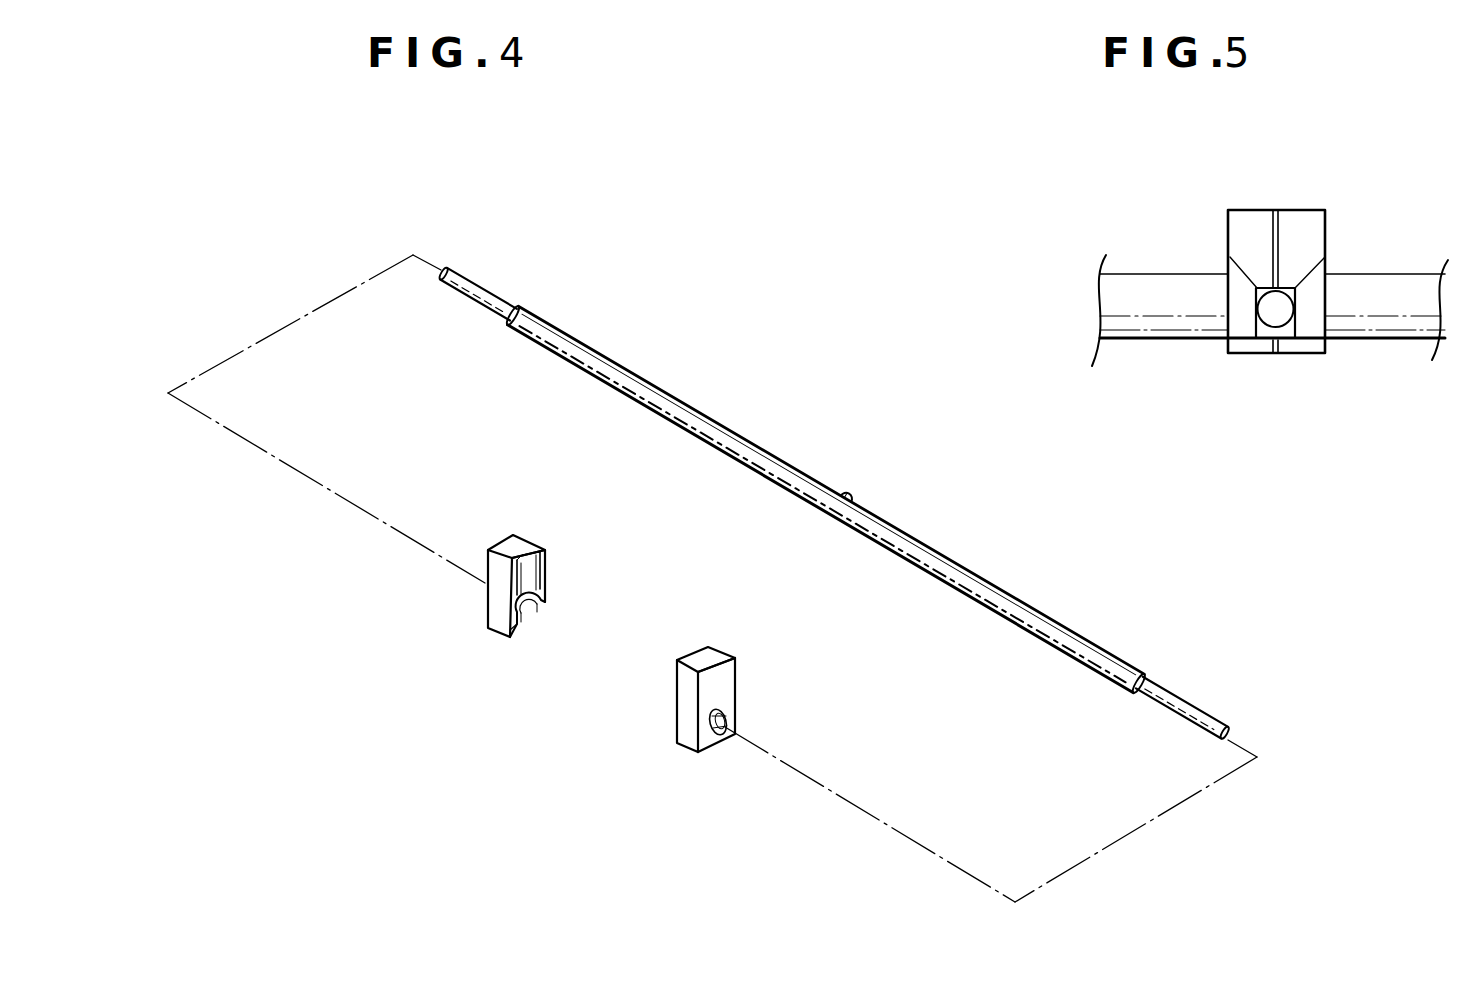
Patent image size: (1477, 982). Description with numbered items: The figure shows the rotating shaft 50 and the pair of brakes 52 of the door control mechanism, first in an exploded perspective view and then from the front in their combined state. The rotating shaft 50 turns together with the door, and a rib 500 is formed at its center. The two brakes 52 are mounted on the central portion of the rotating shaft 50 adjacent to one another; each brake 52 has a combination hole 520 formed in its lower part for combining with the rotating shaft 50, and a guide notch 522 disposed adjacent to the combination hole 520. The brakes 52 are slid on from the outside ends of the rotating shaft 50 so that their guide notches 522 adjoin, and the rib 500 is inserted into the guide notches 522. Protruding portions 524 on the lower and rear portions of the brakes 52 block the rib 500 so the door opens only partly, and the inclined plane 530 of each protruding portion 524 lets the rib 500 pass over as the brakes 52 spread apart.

In FIG. 4, the rotating shaft 50 is at (657, 387).
In FIG. 5, the rotating shaft 50 is at (1178, 328).
In FIG. 4, the rib 500 is at (846, 485).
In FIG. 5, the rib 500 is at (1275, 315).
In FIG. 4, the brakes 52 is at (484, 593).
In FIG. 5, the brakes 52 is at (1247, 220).
In FIG. 4, the combination holes 520 is at (720, 728).
In FIG. 4, the guide notches 522 is at (552, 611).
In FIG. 5, the guide notches 522 is at (1245, 275).
In FIG. 4, the protruding portions 524 is at (508, 640).
In FIG. 4, the inclined plane 530 is at (522, 630).